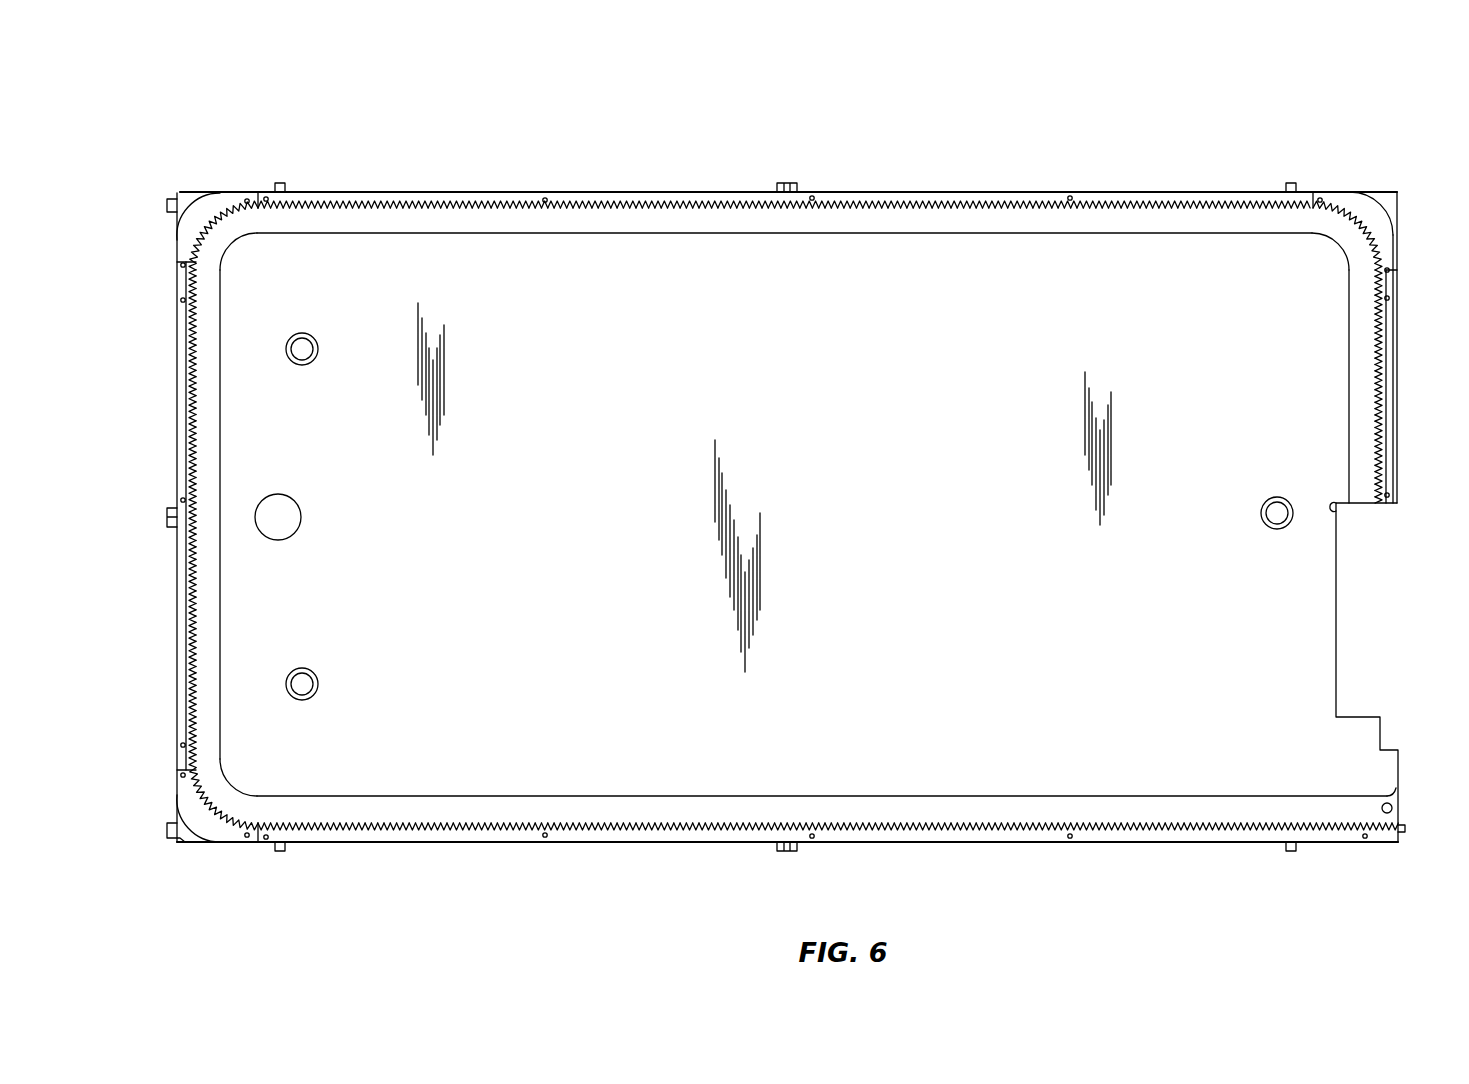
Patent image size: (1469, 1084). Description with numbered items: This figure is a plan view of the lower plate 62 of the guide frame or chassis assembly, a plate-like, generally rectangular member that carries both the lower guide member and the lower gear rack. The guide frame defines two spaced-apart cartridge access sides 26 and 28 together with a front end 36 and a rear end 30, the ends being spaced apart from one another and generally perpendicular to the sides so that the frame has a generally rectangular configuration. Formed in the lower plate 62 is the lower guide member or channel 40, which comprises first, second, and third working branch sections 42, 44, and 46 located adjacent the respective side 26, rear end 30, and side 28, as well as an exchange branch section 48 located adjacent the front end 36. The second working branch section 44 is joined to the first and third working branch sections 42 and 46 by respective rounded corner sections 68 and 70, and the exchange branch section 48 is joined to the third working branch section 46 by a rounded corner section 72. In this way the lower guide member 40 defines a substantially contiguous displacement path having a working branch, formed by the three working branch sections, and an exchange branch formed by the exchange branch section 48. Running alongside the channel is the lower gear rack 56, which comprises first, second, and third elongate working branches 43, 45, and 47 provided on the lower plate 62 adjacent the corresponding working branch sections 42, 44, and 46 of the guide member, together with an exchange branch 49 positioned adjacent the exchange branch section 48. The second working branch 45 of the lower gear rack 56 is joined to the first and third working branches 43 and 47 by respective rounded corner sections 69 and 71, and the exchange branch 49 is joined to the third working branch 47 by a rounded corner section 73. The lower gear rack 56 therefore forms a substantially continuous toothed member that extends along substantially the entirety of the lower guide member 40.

The lower plate 62 is at (356, 128).
The rounded corner section 71 is at (198, 212).
The side 28 is at (1075, 192).
The rounded corner section 73 is at (1368, 205).
The rounded corner section 70 is at (232, 240).
The third working branch 47 is at (927, 212).
The third working branch section 46 is at (1145, 233).
The rounded corner section 72 is at (1335, 245).
The exchange branch section 48 is at (1350, 325).
The front end 36 is at (1400, 353).
The second working branch section 44 is at (222, 393).
The exchange branch 49 is at (1375, 410).
The rear end 30 is at (178, 617).
The second working branch 45 is at (194, 578).
The rounded corner section 68 is at (240, 790).
The lower gear rack 56 is at (655, 820).
The lower guide member or channel 40 is at (869, 793).
The first working branch 43 is at (1108, 823).
The first working branch section 42 is at (1243, 796).
The rounded corner section 69 is at (197, 842).
The side 26 is at (400, 845).